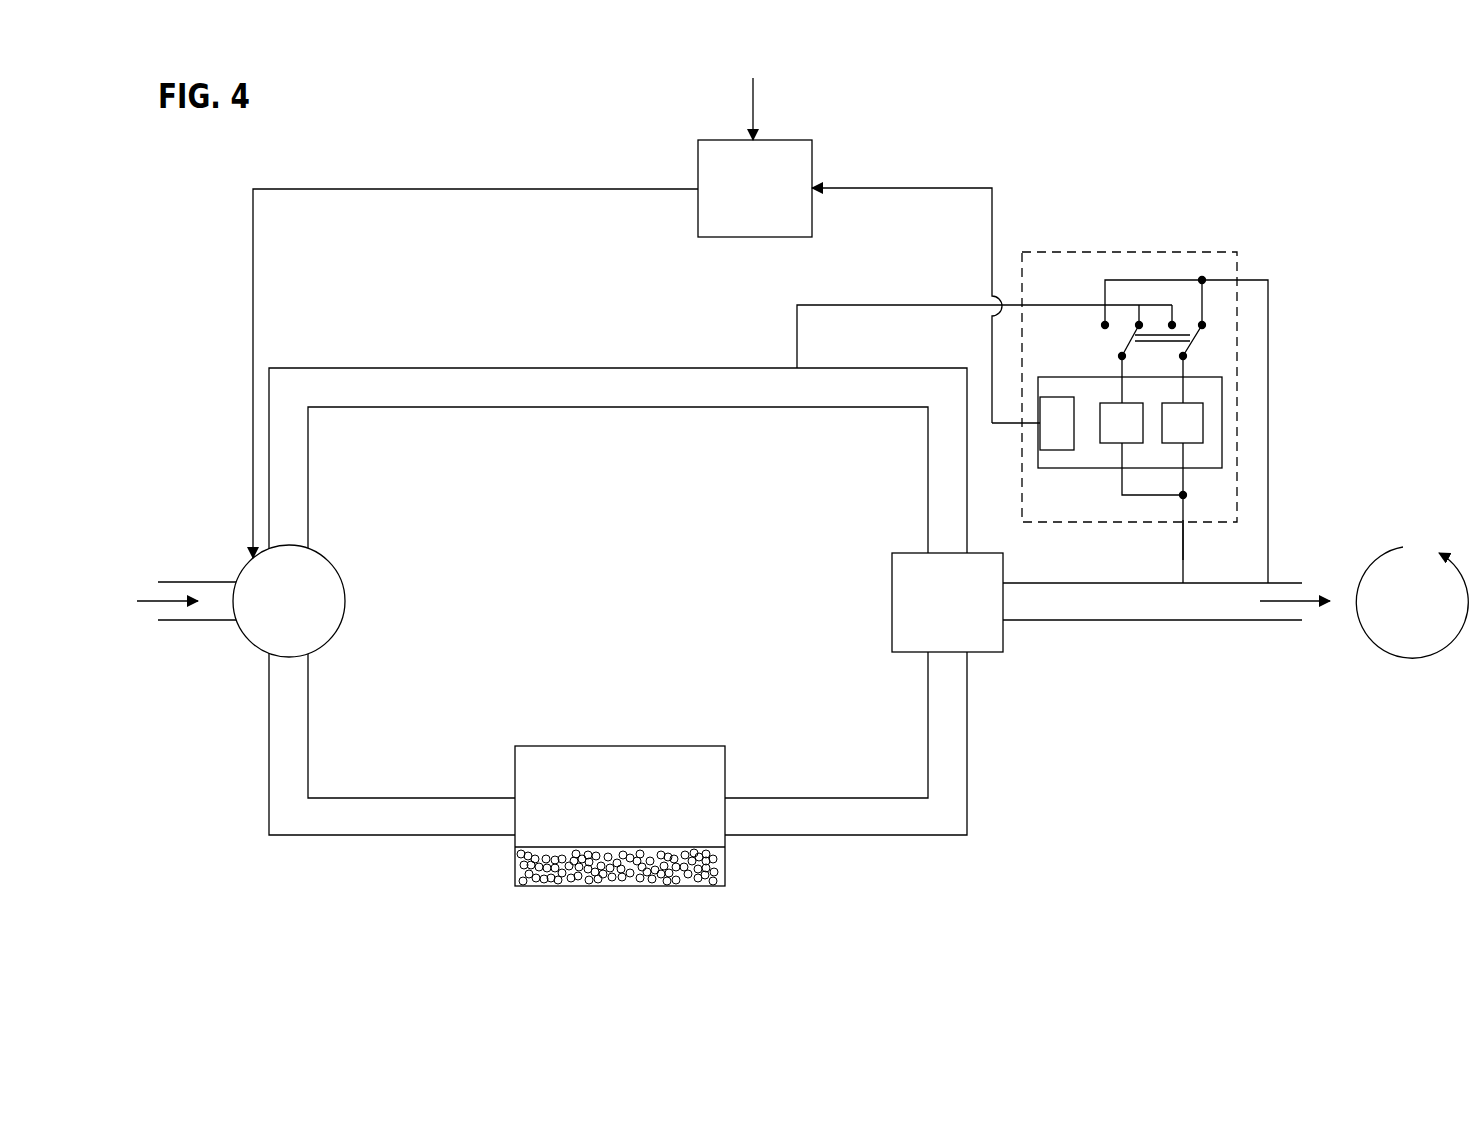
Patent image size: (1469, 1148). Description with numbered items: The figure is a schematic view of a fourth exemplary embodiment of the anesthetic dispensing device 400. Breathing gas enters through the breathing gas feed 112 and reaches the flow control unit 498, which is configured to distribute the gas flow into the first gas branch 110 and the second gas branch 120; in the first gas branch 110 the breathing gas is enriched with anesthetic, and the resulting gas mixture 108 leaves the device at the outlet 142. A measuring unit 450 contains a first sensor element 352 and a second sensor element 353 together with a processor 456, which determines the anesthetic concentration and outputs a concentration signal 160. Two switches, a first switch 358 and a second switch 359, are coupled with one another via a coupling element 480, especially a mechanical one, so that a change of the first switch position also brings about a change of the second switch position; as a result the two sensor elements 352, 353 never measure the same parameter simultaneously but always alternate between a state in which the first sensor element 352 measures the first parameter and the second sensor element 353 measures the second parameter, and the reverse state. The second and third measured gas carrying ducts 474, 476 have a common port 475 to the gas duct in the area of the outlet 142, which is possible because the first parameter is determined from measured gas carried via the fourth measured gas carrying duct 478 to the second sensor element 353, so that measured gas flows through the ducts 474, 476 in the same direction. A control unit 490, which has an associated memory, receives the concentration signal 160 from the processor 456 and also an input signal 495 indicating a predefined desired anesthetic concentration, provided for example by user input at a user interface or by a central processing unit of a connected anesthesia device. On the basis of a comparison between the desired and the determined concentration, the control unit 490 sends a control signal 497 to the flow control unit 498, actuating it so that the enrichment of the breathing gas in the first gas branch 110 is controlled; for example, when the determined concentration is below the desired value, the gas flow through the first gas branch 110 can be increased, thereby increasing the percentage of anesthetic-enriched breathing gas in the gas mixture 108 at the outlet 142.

The anesthetic dispensing device 400 is at (1350, 157).
The gas mixture 108 is at (1276, 606).
The first gas branch 110 is at (418, 818).
The breathing gas feed 112 is at (172, 610).
The second gas branch 120 is at (440, 390).
The outlet 142 is at (1293, 613).
The concentration signal 160 is at (943, 188).
The first sensor element 352 is at (1115, 427).
The second sensor element 353 is at (1195, 425).
The first switch 358 is at (1120, 320).
The second switch 359 is at (1185, 320).
The measuring unit 450 is at (1237, 262).
The processor 456 is at (1067, 437).
The second measured gas carrying duct 474 is at (1141, 500).
The common port 475 is at (1183, 537).
The third measured gas carrying duct 476 is at (1185, 477).
The fourth measured gas carrying duct 478 is at (1268, 437).
The coupling element 480 is at (1185, 350).
The control unit 490 is at (755, 188).
The input signal 495 is at (755, 105).
The control signal 497 is at (485, 188).
The flow control unit 498 is at (289, 601).